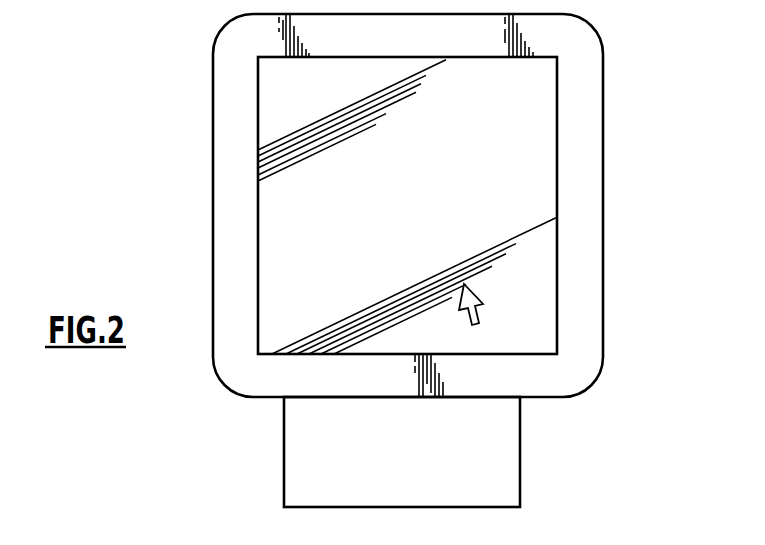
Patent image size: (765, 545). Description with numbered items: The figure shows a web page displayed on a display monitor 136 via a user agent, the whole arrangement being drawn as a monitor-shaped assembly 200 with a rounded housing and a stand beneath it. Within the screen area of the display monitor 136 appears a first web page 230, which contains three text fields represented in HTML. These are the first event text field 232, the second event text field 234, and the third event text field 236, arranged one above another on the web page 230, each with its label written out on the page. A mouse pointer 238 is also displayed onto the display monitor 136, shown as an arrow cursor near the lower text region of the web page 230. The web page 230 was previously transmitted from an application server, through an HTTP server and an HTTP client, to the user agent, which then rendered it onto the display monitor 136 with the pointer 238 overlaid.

The mobile device / computing device 200 is at (670, 27).
The first web page 230 is at (527, 122).
The display monitor 136 is at (527, 385).
The text field labeled "Event 1" 232 is at (278, 117).
The text field labeled "Event 2" 234 is at (278, 194).
The text field labeled "Event 3" 236 is at (278, 272).
The mouse pointer 238 is at (478, 292).